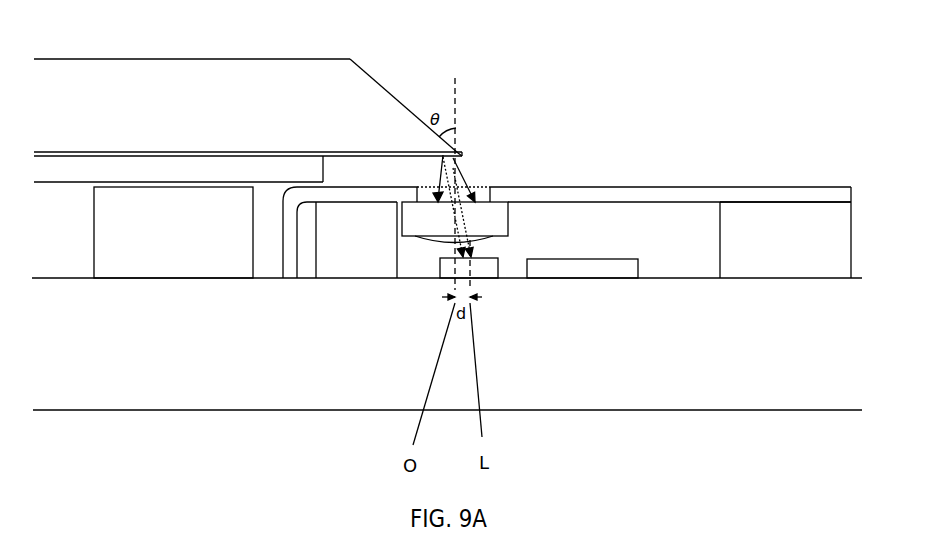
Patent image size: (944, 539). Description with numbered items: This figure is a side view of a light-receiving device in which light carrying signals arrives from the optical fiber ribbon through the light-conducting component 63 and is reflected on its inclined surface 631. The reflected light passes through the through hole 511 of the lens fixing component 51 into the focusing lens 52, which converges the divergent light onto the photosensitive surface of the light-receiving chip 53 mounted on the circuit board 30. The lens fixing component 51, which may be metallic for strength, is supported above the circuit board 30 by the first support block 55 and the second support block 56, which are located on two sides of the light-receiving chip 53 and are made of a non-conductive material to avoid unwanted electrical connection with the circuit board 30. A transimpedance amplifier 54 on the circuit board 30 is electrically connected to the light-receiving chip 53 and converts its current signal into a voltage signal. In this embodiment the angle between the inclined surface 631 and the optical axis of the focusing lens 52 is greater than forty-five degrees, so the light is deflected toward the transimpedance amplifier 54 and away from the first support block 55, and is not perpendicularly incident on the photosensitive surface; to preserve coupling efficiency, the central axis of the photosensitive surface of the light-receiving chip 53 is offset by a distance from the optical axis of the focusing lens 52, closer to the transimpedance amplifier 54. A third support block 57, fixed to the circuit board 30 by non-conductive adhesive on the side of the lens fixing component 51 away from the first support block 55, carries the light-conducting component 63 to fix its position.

The light-conducting component 63 is at (235, 90).
The inclined surface 631 is at (399, 100).
The circuit board 30 is at (664, 363).
The lens fixing component 51 is at (643, 193).
The through hole 511 is at (483, 192).
The focusing lens 52 is at (485, 222).
The light-receiving chip 53 is at (435, 272).
The transimpedance amplifier 54 is at (583, 274).
The first support block 55 is at (335, 263).
The second support block 56 is at (788, 260).
The third support block 57 is at (158, 263).